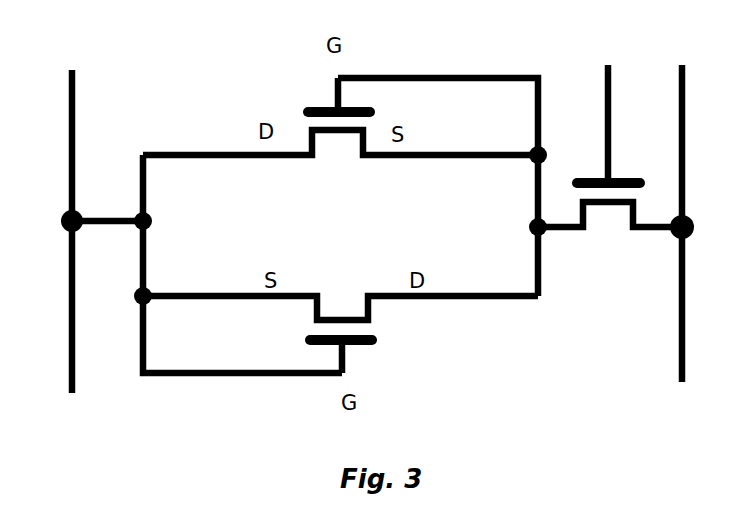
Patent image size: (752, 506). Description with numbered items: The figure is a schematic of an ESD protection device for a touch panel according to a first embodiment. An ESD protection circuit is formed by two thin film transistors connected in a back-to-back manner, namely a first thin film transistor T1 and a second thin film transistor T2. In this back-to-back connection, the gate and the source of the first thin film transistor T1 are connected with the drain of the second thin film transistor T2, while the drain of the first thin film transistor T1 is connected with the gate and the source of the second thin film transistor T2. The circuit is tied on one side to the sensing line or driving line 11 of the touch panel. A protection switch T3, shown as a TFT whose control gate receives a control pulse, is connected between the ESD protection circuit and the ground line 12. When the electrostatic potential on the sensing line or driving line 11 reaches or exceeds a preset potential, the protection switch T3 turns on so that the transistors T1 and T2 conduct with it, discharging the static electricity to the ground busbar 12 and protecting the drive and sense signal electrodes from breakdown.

The sensing line or driving line 11 is at (80, 205).
The ground busbar 12 is at (697, 198).
The first thin film transistor T1 is at (340, 187).
The second thin film transistor T2 is at (340, 321).
The protection switch T3 is at (610, 173).